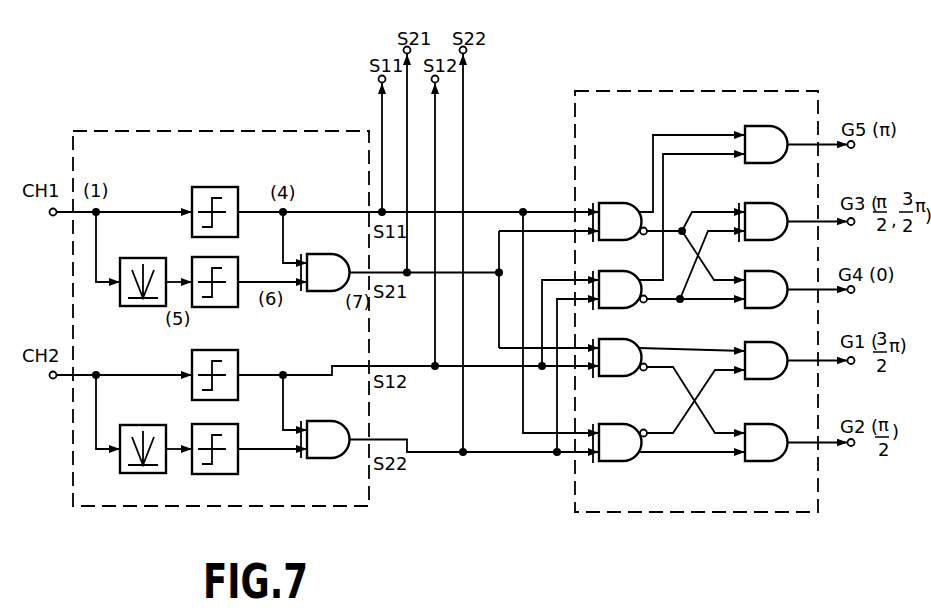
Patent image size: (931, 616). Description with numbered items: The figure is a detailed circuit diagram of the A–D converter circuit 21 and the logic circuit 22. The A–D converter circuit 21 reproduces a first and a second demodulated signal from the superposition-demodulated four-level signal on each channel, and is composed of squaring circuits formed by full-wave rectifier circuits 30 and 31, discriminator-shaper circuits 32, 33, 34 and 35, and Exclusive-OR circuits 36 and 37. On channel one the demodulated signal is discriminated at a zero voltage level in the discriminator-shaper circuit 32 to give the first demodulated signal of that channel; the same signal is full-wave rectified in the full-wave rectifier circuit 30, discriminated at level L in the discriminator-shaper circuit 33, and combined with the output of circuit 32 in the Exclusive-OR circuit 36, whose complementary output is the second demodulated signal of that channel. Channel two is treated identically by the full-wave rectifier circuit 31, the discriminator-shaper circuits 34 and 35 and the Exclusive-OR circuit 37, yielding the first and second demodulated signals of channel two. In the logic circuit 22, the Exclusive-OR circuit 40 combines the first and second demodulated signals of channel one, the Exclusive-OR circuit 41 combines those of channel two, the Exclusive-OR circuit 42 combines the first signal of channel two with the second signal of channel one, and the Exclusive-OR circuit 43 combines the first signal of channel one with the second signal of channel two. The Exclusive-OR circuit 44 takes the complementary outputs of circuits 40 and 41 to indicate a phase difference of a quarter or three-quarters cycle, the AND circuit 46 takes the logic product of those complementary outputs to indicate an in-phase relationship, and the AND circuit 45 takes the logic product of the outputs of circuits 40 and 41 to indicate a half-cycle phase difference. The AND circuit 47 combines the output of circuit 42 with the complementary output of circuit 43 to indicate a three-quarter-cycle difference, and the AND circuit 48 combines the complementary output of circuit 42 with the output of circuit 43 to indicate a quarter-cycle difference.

The A–D converter circuit 21 is at (197, 131).
The logic circuit 22 is at (643, 88).
The full-wave rectifier circuit 30 is at (159, 257).
The full-wave rectifier circuit 31 is at (160, 421).
The discriminator-shaper circuit 32 is at (238, 184).
The discriminator-shaper circuit 33 is at (238, 272).
The discriminator-shaper circuit 34 is at (241, 335).
The discriminator-shaper circuit 35 is at (238, 439).
The Exclusive-OR circuit 36 is at (345, 254).
The Exclusive-OR circuit 37 is at (340, 420).
The Exclusive-OR circuit 40 is at (633, 202).
The Exclusive-OR circuit 41 is at (642, 270).
The Exclusive-OR circuit 42 is at (643, 339).
The Exclusive-OR circuit 43 is at (643, 424).
The Exclusive-OR circuit 44 is at (794, 203).
The AND circuit 45 is at (793, 126).
The AND circuit 46 is at (794, 271).
The AND circuit 47 is at (794, 342).
The AND circuit 48 is at (794, 424).